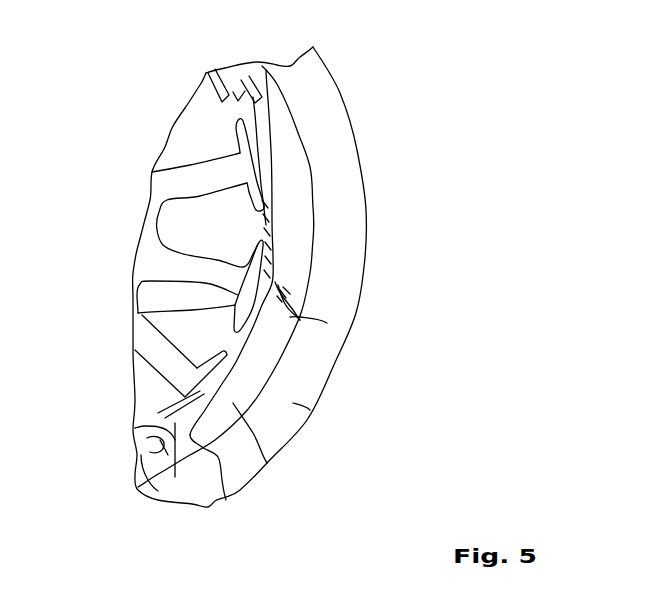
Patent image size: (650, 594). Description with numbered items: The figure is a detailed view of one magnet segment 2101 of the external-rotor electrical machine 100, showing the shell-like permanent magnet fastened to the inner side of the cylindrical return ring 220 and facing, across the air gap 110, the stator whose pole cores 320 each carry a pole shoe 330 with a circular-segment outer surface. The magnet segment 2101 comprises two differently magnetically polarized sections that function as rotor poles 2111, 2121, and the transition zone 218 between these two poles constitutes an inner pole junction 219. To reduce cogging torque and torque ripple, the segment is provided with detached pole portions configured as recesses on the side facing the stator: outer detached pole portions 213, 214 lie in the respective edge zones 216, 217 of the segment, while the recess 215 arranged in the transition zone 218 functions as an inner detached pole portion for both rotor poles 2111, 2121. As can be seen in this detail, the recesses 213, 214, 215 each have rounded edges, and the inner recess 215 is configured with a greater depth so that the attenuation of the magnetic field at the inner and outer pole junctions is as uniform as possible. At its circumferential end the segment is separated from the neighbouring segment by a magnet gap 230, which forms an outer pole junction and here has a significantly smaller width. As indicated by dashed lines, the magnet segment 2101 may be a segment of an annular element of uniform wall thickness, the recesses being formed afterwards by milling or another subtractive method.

The electrical machine 100 is at (128, 97).
The air gap 110 is at (158, 394).
The detached pole portion 213 is at (248, 90).
The detached pole portion 214 is at (140, 430).
The recess 215 is at (275, 280).
The edge zone 216 is at (277, 118).
The edge zone 217 is at (226, 500).
The transition zone 218 is at (287, 303).
The inner pole junction 219 is at (327, 323).
The return ring 220 is at (310, 410).
The magnet gap 230 is at (175, 477).
The pole core 320 is at (190, 267).
The pole shoe 330 is at (143, 312).
The magnet segment 2101 is at (295, 168).
The rotor pole 2111 is at (293, 205).
The rotor pole 2121 is at (267, 463).